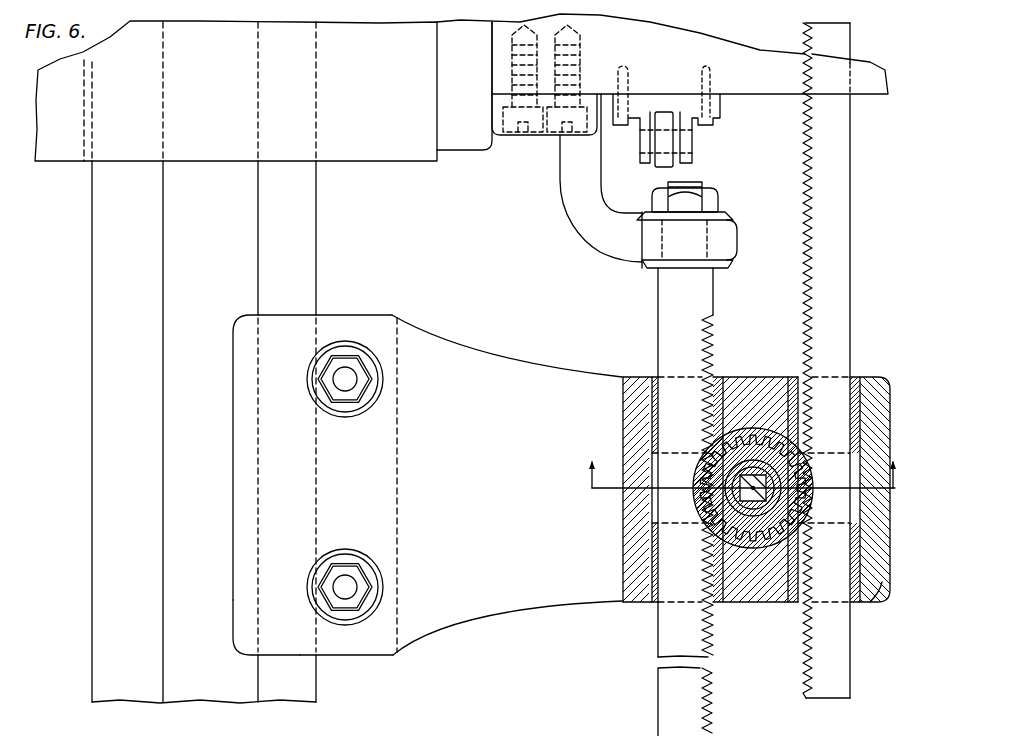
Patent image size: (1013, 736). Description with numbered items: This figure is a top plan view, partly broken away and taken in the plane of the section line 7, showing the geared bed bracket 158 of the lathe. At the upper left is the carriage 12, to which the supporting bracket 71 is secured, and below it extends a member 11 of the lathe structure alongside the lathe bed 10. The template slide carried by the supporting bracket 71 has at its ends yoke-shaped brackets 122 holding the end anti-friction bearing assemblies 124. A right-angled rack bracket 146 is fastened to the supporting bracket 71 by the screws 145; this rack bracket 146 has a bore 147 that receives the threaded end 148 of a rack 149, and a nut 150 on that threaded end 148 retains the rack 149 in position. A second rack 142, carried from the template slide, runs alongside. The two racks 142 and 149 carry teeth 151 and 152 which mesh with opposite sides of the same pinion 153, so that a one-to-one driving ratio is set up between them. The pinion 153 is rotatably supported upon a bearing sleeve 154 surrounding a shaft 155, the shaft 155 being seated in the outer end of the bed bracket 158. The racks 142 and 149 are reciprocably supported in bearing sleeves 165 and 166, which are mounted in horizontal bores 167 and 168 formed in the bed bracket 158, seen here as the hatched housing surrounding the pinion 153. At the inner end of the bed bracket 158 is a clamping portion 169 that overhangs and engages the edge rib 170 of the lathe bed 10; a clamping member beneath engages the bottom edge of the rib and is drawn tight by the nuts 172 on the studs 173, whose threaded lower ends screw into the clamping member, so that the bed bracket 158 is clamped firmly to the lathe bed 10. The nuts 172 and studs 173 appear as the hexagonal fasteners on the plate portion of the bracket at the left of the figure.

The section line 7 is at (743, 464).
The lathe bed 10 is at (200, 692).
The support column 11 is at (92, 472).
The carriage 12 is at (383, 162).
The supporting bracket 71 is at (790, 87).
The yoke-shaped brackets 122 is at (643, 102).
The end anti-friction bearing assemblies 124 is at (700, 130).
The rack 142 is at (848, 190).
The screws 145 is at (512, 127).
The rack bracket 146 is at (571, 208).
The bore 147 is at (707, 242).
The threaded end 148 is at (702, 183).
The rack 149 is at (660, 299).
The nut 150 is at (718, 198).
The teeth 151 is at (803, 290).
The teeth 152 is at (715, 347).
The pinion 153 is at (722, 460).
The bearing sleeve 154 is at (735, 480).
The shaft 155 is at (730, 492).
The bed bracket 158 is at (520, 375).
The bearing sleeve 165 is at (852, 612).
The bearing sleeve 166 is at (652, 603).
The horizontal bore 167 is at (867, 600).
The horizontal bore 168 is at (652, 547).
The clamping portion 169 is at (242, 622).
The edge rib 170 is at (310, 278).
The nuts 172 is at (363, 397).
The studs 173 is at (350, 378).